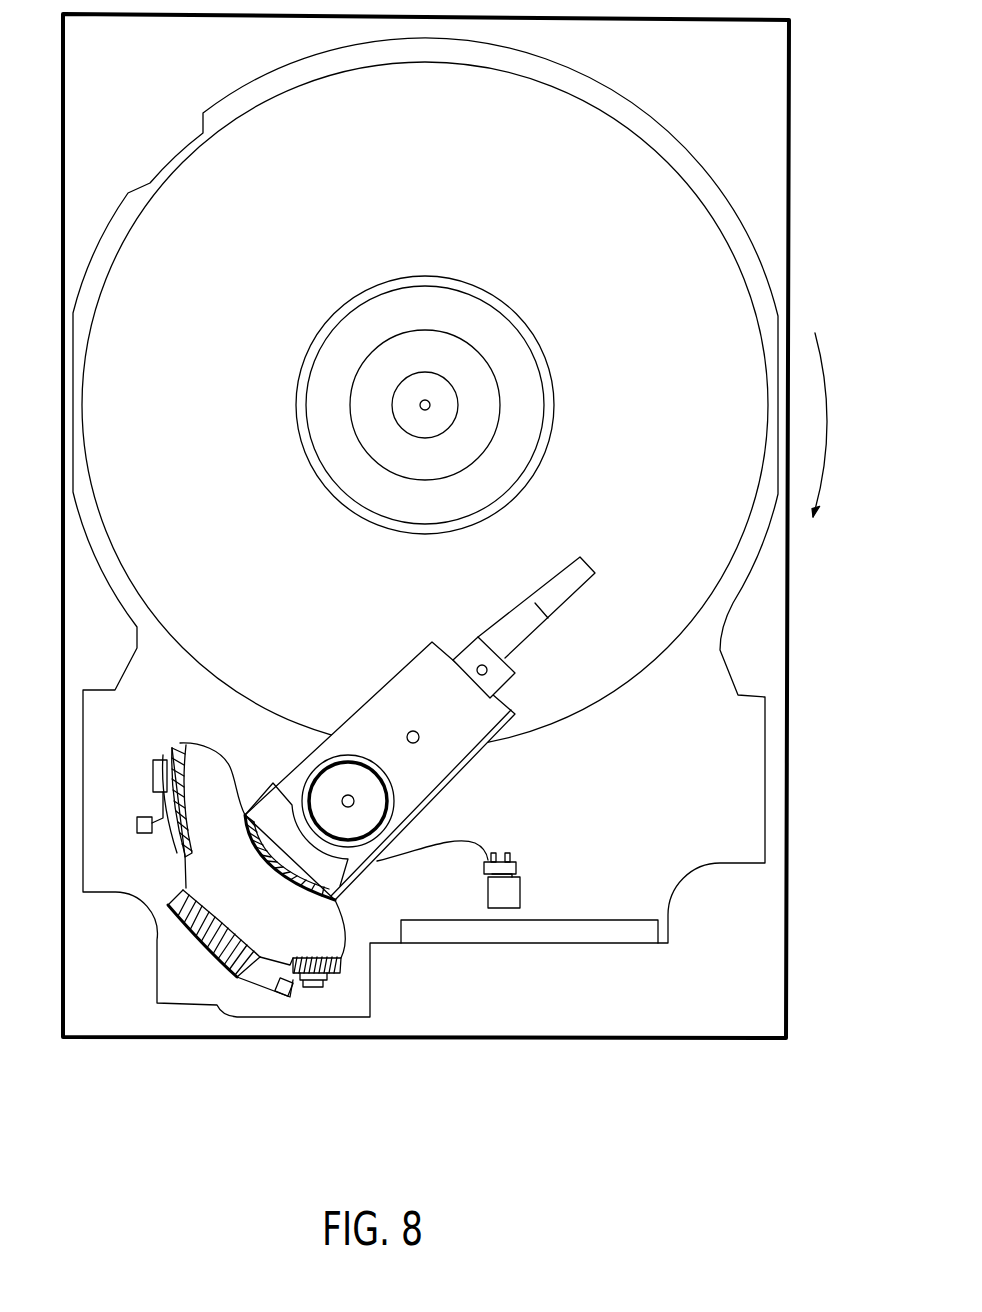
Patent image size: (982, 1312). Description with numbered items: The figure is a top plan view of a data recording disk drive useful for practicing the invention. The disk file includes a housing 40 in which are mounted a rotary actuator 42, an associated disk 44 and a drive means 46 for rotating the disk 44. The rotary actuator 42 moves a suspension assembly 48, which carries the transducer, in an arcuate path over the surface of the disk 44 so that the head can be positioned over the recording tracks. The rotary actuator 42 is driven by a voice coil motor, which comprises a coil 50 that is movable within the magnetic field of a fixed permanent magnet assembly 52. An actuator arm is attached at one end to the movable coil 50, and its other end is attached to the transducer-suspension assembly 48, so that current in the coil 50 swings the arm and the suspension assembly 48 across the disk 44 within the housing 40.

The housing 40 is at (773, 780).
The rotary actuator 42 is at (420, 820).
The disk 44 is at (708, 292).
The drive means 46 is at (418, 502).
The suspension assembly 48 is at (577, 605).
The coil 50 is at (262, 950).
The permanent magnet assembly 52 is at (447, 745).